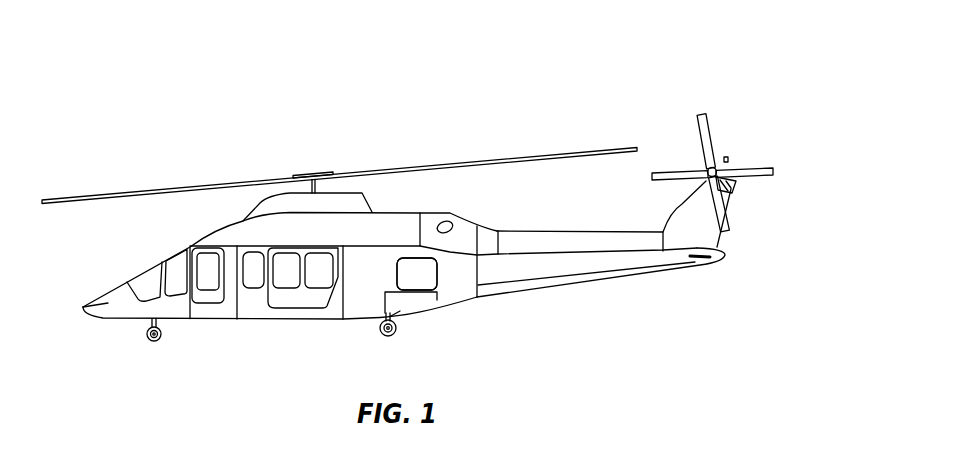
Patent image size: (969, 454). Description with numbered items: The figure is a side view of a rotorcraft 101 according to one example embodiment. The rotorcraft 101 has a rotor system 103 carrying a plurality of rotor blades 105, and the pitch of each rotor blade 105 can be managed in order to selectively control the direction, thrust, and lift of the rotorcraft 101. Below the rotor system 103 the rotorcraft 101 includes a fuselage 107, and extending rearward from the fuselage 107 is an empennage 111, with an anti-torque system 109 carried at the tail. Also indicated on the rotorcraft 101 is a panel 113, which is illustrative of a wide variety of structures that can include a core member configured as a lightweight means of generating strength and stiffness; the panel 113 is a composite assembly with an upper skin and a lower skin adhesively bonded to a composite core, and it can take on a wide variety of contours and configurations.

The rotorcraft 101 is at (230, 91).
The rotor system 103 is at (340, 159).
The rotor blade 105 is at (521, 157).
The fuselage 107 is at (249, 320).
The anti-torque system 109 is at (734, 151).
The empennage 111 is at (589, 284).
The panel 113 is at (438, 283).